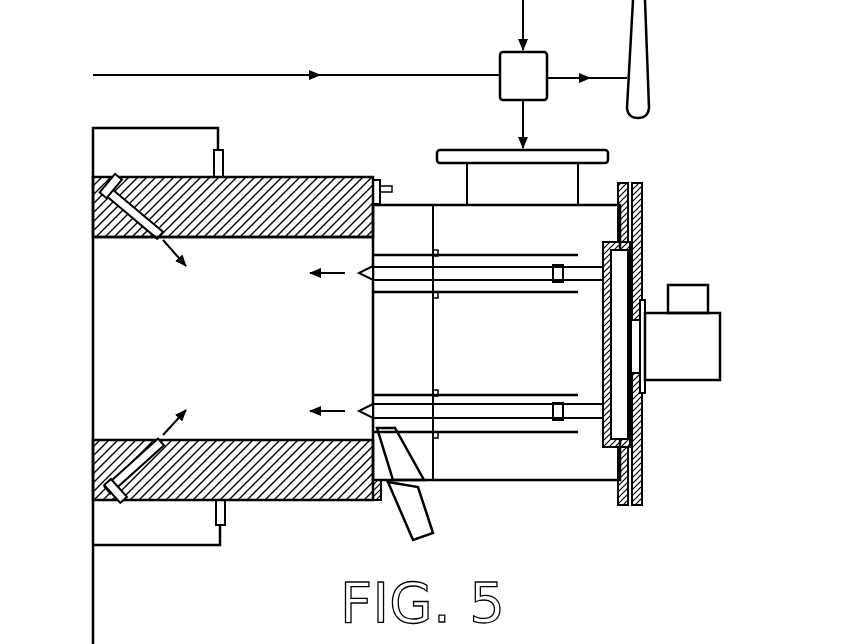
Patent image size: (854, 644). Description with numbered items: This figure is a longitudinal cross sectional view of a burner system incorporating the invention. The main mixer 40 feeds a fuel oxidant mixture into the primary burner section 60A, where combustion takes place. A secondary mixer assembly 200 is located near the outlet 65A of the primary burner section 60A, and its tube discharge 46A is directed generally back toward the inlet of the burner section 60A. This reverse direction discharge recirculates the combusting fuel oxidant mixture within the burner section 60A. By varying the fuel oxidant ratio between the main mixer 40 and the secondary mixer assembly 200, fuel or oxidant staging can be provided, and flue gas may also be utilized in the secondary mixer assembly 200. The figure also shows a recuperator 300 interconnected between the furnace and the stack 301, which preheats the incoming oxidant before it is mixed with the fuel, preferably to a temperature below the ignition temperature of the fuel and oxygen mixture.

The secondary mixer assembly 200 is at (107, 211).
The tube discharge 46A is at (153, 237).
The outlet 65A is at (93, 335).
The primary burner section 60A is at (292, 352).
The main mixer 40 is at (497, 288).
The recuperator 300 is at (512, 72).
The stack 301 is at (640, 62).